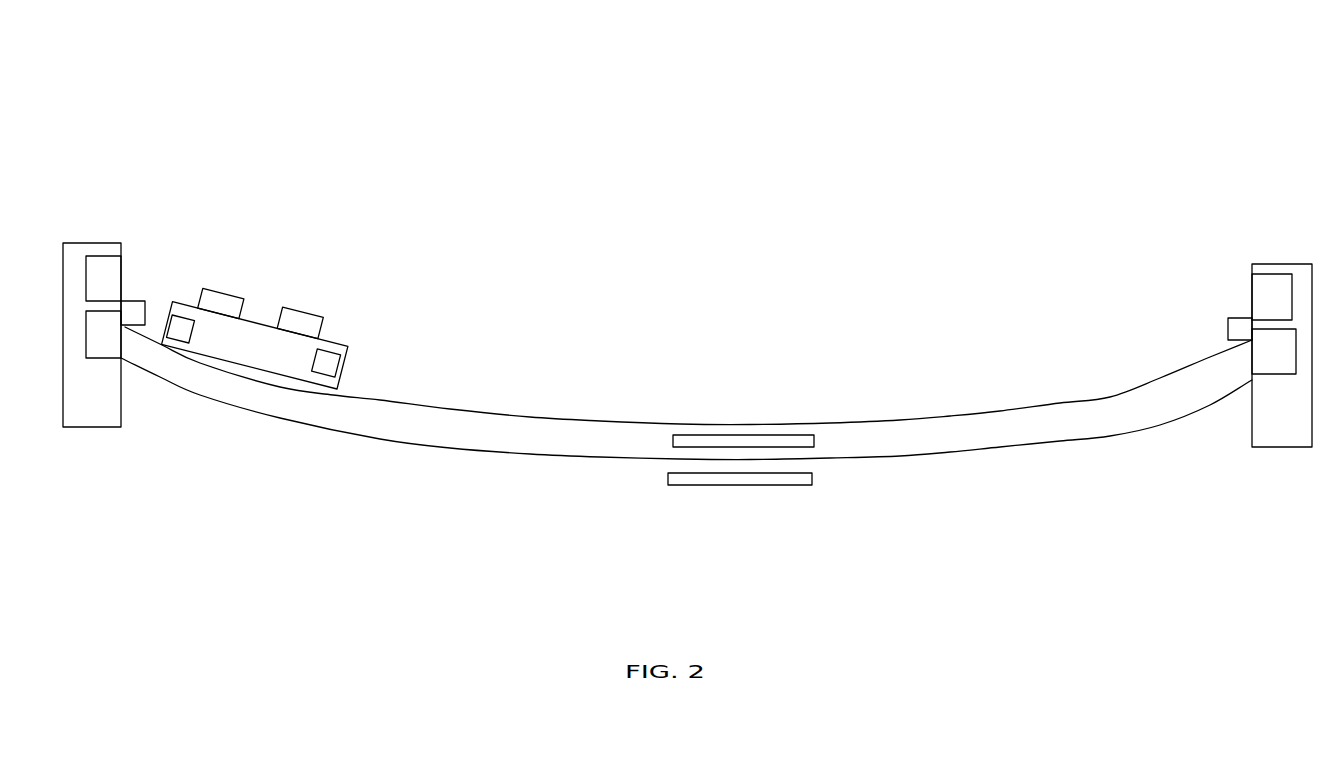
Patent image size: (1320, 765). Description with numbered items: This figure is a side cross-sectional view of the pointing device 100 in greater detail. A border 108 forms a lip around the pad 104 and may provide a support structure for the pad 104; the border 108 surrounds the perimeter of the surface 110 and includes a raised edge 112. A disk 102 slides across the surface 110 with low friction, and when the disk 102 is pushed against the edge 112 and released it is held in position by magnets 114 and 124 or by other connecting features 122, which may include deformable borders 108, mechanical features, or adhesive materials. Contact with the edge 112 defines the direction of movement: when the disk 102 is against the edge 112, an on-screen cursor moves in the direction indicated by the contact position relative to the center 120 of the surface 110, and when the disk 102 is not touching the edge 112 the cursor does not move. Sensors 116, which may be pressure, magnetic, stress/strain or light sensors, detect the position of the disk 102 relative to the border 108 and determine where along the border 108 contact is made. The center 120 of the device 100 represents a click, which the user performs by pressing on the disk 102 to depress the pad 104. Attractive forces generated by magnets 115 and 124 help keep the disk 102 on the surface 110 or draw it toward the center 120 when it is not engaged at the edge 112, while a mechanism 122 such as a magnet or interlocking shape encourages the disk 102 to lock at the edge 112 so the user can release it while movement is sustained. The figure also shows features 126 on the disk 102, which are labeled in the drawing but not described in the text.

The pointing device 100 is at (590, 29).
The disk 102 is at (357, 297).
The pad 104 is at (902, 482).
The border 108 is at (95, 245).
The surface 110 is at (1042, 405).
The raised edge 112 is at (123, 253).
The magnet 114 is at (105, 277).
The magnet 115 is at (787, 433).
The sensor 116 is at (103, 357).
The center 120 is at (658, 415).
The connecting feature 122 is at (129, 310).
The magnet 124 is at (180, 325).
The module contacts 126 is at (230, 287).